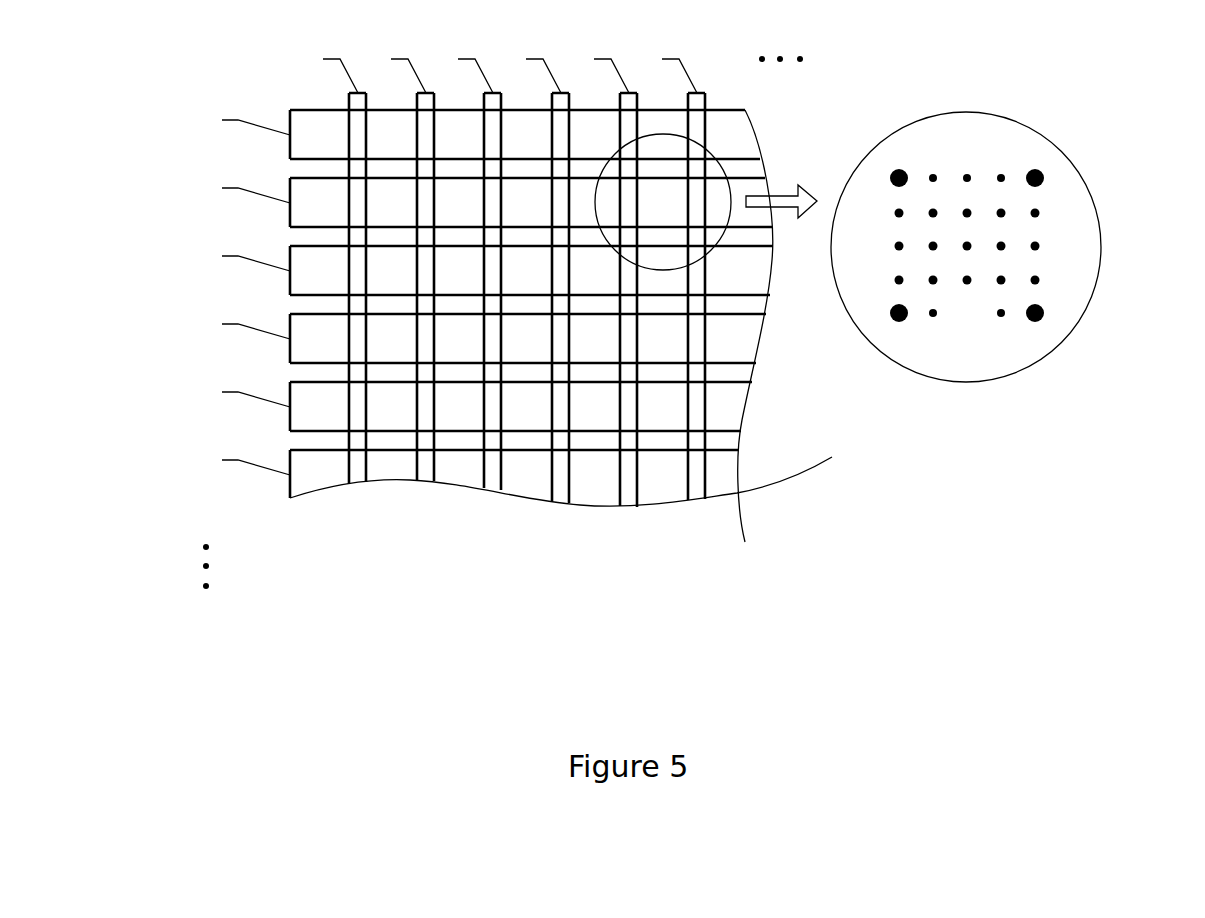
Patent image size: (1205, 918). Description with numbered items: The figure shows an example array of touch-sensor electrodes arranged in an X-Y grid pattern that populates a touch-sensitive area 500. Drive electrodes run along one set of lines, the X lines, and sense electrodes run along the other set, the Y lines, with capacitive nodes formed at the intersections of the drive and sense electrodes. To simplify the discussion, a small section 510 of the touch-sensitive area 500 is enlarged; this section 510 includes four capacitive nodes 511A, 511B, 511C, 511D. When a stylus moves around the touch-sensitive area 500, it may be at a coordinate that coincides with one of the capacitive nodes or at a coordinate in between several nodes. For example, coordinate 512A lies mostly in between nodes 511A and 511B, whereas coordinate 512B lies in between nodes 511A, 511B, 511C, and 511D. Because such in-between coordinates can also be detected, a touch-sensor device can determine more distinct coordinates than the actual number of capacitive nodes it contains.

The touch-sensitive area 500 is at (767, 622).
The section 510 is at (1070, 420).
The capacitive node 511A is at (897, 170).
The capacitive node 511B is at (1040, 170).
The capacitive node 511C is at (897, 320).
The capacitive node 511D is at (1038, 320).
The coordinate 512A is at (968, 173).
The coordinate 512B is at (966, 285).